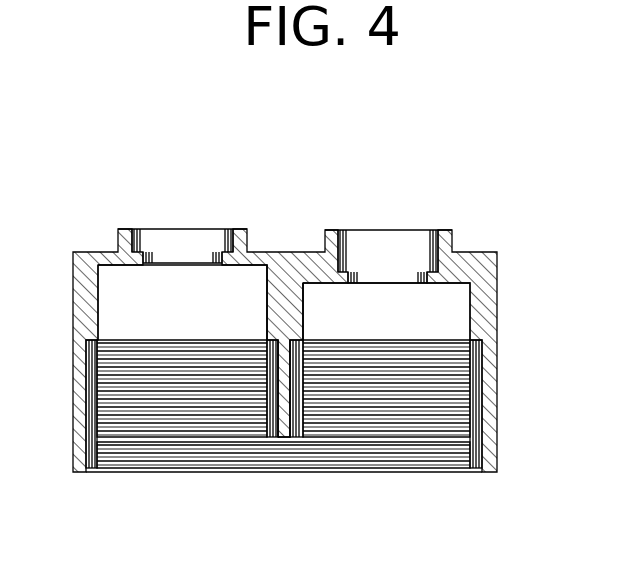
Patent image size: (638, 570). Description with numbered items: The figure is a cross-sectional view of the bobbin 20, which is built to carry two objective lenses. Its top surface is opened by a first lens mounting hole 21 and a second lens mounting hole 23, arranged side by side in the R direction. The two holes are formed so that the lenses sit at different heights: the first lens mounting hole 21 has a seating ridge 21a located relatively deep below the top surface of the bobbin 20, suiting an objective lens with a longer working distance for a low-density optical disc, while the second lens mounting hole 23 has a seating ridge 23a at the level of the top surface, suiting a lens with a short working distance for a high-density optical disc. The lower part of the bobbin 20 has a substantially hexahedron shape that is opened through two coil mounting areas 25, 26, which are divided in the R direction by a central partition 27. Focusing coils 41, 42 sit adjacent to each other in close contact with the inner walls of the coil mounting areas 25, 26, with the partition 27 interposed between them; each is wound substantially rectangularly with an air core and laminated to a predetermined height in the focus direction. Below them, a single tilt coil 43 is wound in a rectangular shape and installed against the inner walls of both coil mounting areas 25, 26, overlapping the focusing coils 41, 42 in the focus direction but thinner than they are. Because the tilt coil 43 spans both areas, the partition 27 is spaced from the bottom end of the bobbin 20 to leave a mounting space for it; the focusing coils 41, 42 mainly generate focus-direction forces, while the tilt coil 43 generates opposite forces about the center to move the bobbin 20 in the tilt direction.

The bobbin 20 is at (504, 244).
The first lens mounting hole 21 is at (370, 242).
The seating ridge 21a is at (405, 276).
The second lens mounting hole 23 is at (150, 240).
The seating ridge 23a is at (178, 252).
The coil mounting area 25 is at (458, 308).
The coil mounting area 26 is at (110, 300).
The central partition 27 is at (278, 386).
The focusing coil 41 is at (453, 388).
The focusing coil 42 is at (105, 372).
The tilt coil 43 is at (280, 458).